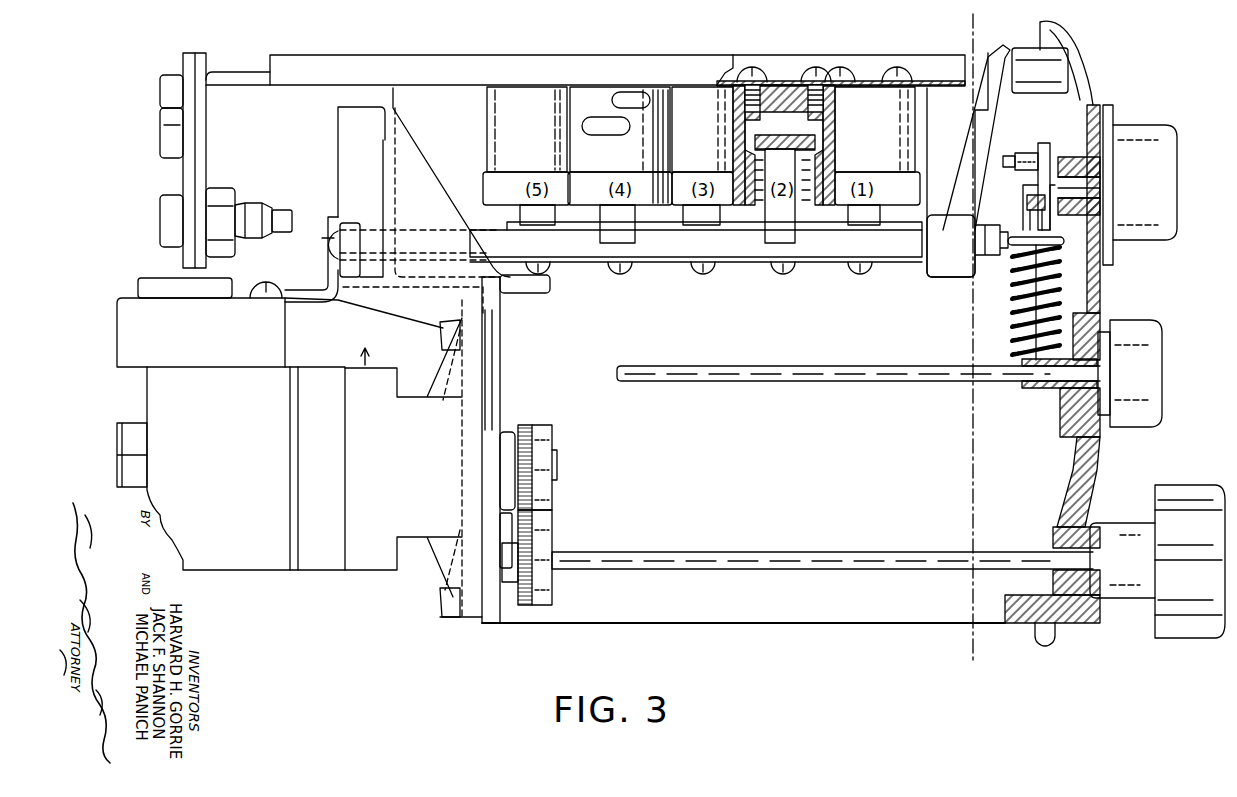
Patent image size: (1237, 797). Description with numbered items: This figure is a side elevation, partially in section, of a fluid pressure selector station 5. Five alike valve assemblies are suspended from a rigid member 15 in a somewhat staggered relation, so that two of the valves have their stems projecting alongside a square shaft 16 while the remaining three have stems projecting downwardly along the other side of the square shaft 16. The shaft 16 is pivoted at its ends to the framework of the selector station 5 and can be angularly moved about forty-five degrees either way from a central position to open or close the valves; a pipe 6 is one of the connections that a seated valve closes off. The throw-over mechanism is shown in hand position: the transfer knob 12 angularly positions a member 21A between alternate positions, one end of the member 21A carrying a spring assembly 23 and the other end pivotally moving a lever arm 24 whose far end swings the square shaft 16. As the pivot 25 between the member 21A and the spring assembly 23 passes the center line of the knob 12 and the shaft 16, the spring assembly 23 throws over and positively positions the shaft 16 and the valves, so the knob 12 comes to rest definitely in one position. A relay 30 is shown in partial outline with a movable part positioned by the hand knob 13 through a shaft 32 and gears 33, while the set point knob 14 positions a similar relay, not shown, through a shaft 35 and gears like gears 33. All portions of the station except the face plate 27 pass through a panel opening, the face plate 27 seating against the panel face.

The selector station 5 is at (826, 468).
The pipe 6 is at (973, 14).
The transfer knob 12 is at (1134, 200).
The hand knob 13 is at (1109, 568).
The set point knob 14 is at (1128, 428).
The rigid member 15 is at (935, 82).
The square shaft 16 is at (907, 249).
The member 21A is at (1045, 143).
The spring assembly 23 is at (1013, 300).
The lever arm 24 is at (1004, 153).
The pivot 25 is at (1022, 207).
The face plate 27 is at (1057, 640).
The relay 30 is at (203, 450).
The shaft 32 is at (757, 552).
The gears 33 is at (553, 522).
The shaft 35 is at (797, 366).